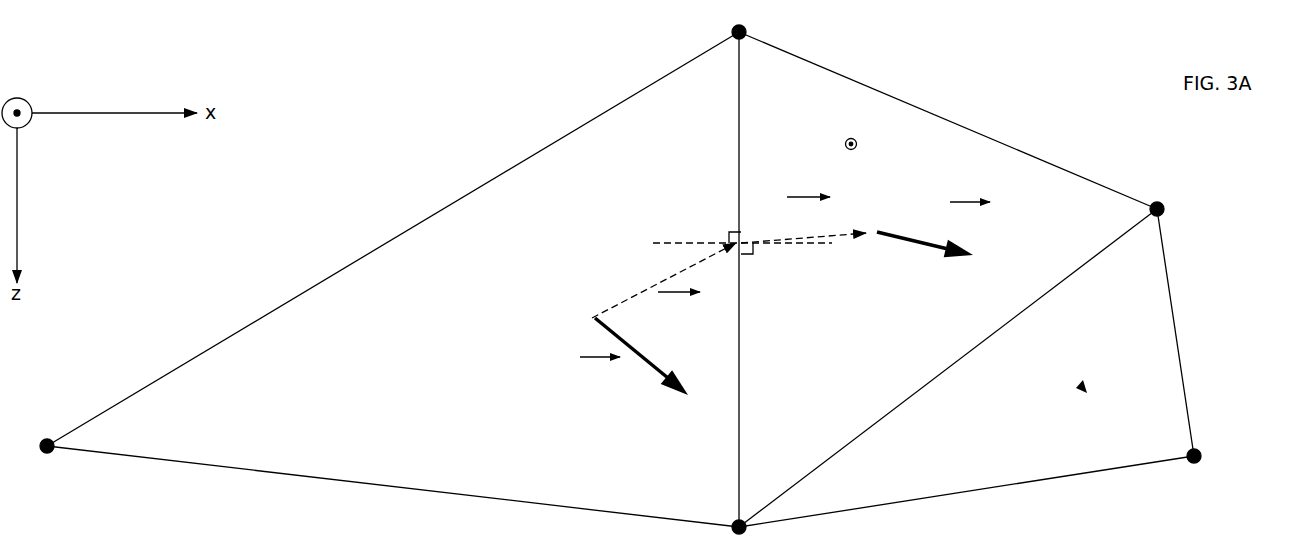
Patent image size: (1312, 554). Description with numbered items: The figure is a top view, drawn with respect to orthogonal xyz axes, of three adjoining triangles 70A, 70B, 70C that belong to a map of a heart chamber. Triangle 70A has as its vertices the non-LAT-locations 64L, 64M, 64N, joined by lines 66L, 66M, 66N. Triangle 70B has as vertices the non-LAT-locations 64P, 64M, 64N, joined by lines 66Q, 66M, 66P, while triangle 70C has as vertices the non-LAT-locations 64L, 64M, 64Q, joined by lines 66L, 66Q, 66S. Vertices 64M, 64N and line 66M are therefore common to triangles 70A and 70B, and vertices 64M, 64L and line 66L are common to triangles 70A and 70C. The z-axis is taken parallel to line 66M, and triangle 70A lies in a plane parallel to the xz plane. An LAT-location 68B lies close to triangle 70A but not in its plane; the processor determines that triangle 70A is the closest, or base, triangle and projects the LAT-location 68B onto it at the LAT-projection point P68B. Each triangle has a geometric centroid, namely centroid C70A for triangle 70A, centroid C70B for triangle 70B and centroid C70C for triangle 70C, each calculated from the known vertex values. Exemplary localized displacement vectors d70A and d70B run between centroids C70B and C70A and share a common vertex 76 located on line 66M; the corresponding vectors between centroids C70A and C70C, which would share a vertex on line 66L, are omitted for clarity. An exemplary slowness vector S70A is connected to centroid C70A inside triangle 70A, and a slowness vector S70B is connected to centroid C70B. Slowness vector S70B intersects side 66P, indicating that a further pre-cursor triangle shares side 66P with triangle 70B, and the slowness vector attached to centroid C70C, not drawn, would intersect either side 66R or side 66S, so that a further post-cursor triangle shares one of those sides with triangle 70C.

The non-LAT-location 64N is at (743, 40).
The non-LAT-location 64P is at (45, 438).
The non-LAT-location 64M is at (733, 520).
The non-LAT-location 64L is at (1152, 200).
The non-LAT-location 64Q is at (1202, 458).
The line 66P is at (266, 312).
The line 66N is at (1033, 156).
The line 66S is at (1178, 340).
The side 66R is at (930, 495).
The line 66Q is at (216, 467).
The line 66M is at (741, 371).
The line 66L is at (903, 405).
The triangle 70A is at (916, 120).
The triangle 70B is at (465, 218).
The triangle 70C is at (1010, 473).
The LAT-location 68B is at (846, 139).
The LAT-projection point P68B is at (878, 166).
The common vertex 76 is at (741, 243).
The geometric centroid C70A is at (877, 236).
The geometric centroid C70B is at (592, 316).
The geometric centroid C70C is at (1080, 386).
The localized displacement vector d70A is at (807, 207).
The localized displacement vector d70B is at (678, 301).
The slowness vector S70A is at (969, 214).
The slowness vector S70B is at (599, 368).